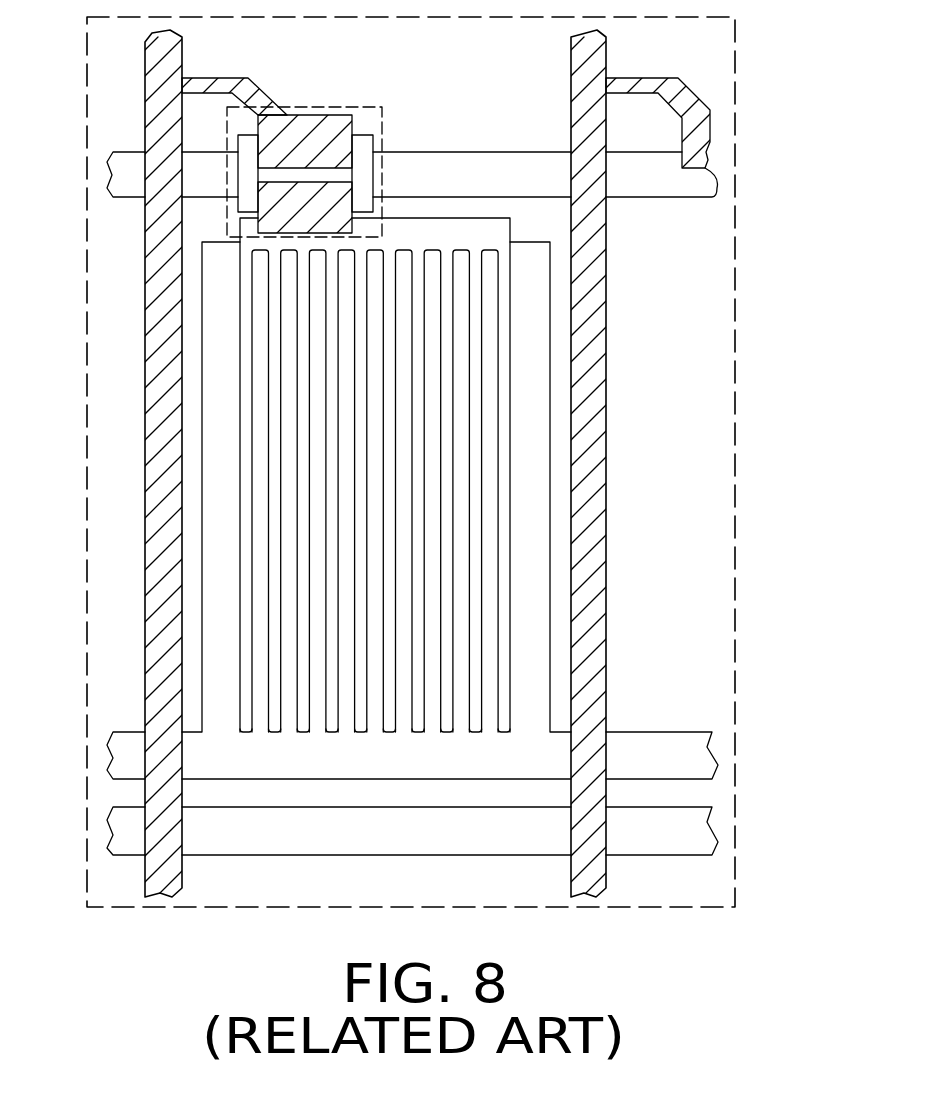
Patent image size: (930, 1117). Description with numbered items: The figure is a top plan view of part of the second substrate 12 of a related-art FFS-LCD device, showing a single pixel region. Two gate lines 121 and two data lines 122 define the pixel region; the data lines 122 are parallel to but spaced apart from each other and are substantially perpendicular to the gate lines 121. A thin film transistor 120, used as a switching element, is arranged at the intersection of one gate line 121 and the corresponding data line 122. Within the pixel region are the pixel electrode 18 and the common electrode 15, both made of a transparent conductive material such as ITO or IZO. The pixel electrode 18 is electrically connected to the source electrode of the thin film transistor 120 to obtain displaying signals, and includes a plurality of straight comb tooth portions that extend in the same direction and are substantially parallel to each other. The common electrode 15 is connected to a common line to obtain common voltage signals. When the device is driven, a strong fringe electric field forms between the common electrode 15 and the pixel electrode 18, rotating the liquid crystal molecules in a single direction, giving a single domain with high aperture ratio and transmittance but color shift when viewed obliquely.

The second substrate 12 is at (697, 567).
The common electrode 15 is at (533, 310).
The pixel electrode 18 is at (502, 373).
The thin film transistor 120 is at (328, 107).
The gate line 121 is at (667, 185).
The data line 122 is at (163, 480).